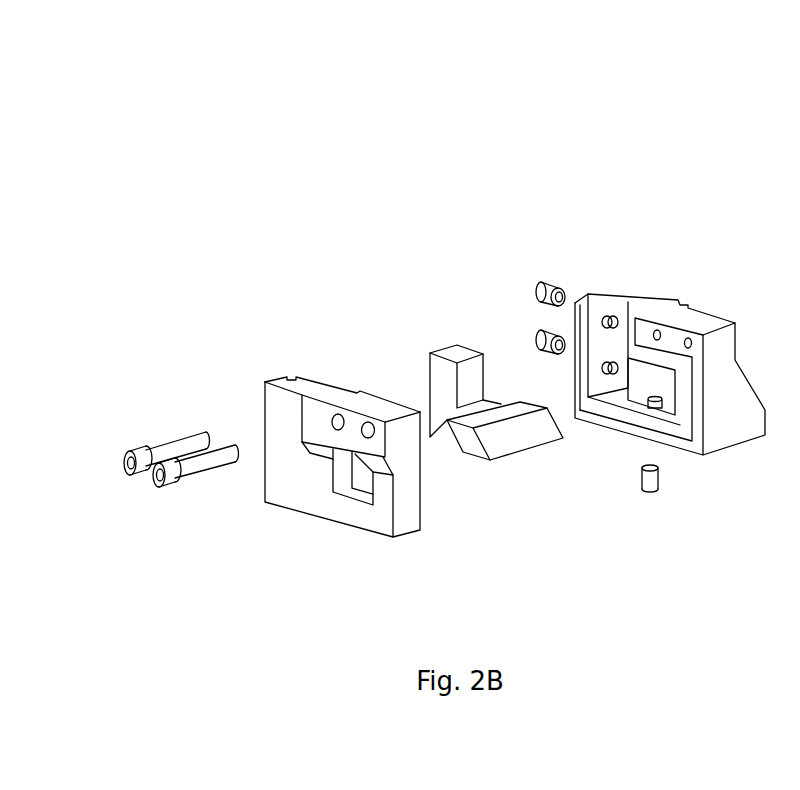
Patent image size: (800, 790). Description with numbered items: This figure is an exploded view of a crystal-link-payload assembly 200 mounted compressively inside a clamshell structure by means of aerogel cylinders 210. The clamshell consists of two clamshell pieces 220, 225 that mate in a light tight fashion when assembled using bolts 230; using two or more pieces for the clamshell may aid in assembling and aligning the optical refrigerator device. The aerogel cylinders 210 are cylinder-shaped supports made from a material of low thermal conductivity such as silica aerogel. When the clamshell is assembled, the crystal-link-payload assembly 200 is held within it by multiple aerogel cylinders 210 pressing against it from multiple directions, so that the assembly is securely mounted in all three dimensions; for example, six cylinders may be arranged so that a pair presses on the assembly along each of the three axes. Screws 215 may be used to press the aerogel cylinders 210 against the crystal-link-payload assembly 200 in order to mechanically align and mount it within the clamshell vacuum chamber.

The crystal-link-payload assembly 200 is at (440, 327).
The aerogel cylinders 210 is at (613, 304).
The screws 215 is at (547, 262).
The clamshell piece 220 is at (290, 362).
The clamshell piece 225 is at (696, 309).
The bolts 230 is at (168, 424).